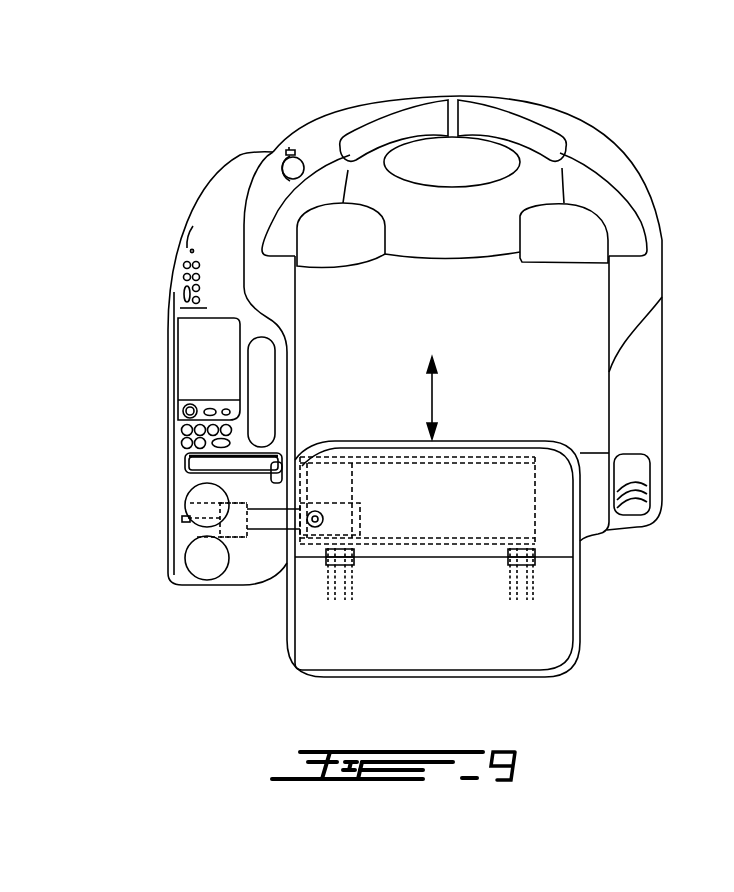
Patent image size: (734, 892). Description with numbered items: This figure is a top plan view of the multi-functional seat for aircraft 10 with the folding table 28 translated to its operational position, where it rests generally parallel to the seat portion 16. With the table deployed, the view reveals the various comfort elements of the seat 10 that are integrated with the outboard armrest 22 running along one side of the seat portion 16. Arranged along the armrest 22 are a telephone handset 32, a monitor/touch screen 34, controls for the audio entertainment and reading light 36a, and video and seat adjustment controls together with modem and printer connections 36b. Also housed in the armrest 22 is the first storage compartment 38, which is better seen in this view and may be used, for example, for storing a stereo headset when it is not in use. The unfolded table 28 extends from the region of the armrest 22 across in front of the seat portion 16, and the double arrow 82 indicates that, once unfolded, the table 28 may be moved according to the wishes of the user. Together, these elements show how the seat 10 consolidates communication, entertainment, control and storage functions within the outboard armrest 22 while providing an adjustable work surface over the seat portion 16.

The multi-functional seat for aircraft 10 is at (164, 197).
The seat portion 16 is at (520, 315).
The outboard armrest 22 is at (160, 516).
The folding table 28 is at (270, 623).
The telephone handset 32 is at (268, 370).
The monitor/touch screen 34 is at (270, 465).
The controls for the audio entertainment and reading light 36a is at (157, 230).
The video and seat adjustment controls and modem and printer connections 36b is at (155, 400).
The first storage compartment 38 is at (196, 370).
The double arrow 82 is at (432, 408).